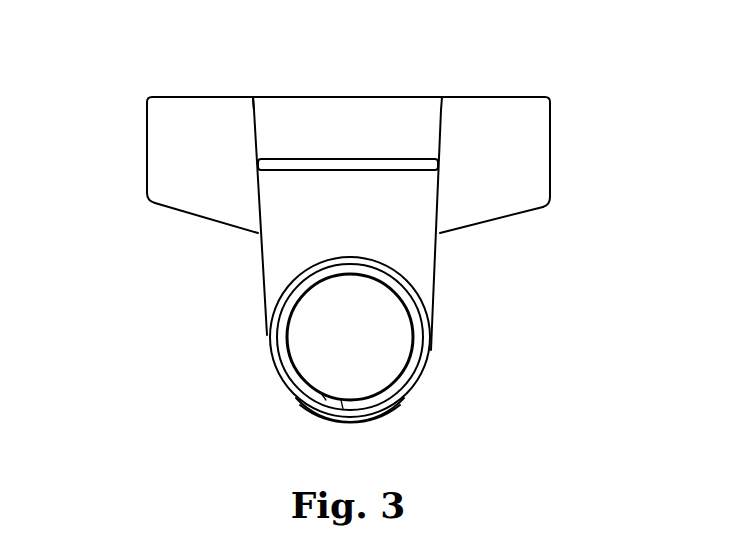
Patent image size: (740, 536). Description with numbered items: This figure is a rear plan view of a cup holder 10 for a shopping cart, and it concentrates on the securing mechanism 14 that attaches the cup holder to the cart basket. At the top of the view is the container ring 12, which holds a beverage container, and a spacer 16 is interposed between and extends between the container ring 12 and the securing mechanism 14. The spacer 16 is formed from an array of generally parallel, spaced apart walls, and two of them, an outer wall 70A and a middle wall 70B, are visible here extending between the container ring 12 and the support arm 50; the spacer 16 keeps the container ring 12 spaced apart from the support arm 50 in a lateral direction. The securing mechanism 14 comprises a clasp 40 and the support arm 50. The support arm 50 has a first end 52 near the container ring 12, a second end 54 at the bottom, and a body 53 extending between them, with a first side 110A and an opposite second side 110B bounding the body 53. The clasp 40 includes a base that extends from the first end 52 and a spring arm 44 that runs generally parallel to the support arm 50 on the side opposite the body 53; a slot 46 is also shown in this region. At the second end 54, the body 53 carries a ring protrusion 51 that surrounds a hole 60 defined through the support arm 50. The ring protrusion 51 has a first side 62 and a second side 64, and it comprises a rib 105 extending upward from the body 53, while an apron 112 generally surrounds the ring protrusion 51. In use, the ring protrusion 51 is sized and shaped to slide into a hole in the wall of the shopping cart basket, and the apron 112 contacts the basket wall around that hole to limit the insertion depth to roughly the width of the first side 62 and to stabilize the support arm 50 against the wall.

The cup holder 10 is at (120, 78).
The container ring 12 is at (550, 150).
The securing mechanism 14 is at (400, 92).
The spacer 16 is at (155, 214).
The clasp 40 is at (299, 110).
The spring arm 44 is at (335, 118).
The slot 46 is at (408, 170).
The support arm 50 is at (258, 350).
The ring protrusion 51 is at (434, 315).
The first end 52 is at (252, 113).
The body 53 is at (337, 227).
The second end 54 is at (370, 415).
The hole 60 is at (336, 342).
The first side 62 is at (348, 261).
The second side 64 is at (342, 397).
The wall 70A is at (488, 212).
The wall 70B is at (197, 200).
The rib 105 is at (323, 393).
The first side 110A is at (262, 282).
The second side 110B is at (437, 262).
The apron 112 is at (302, 395).